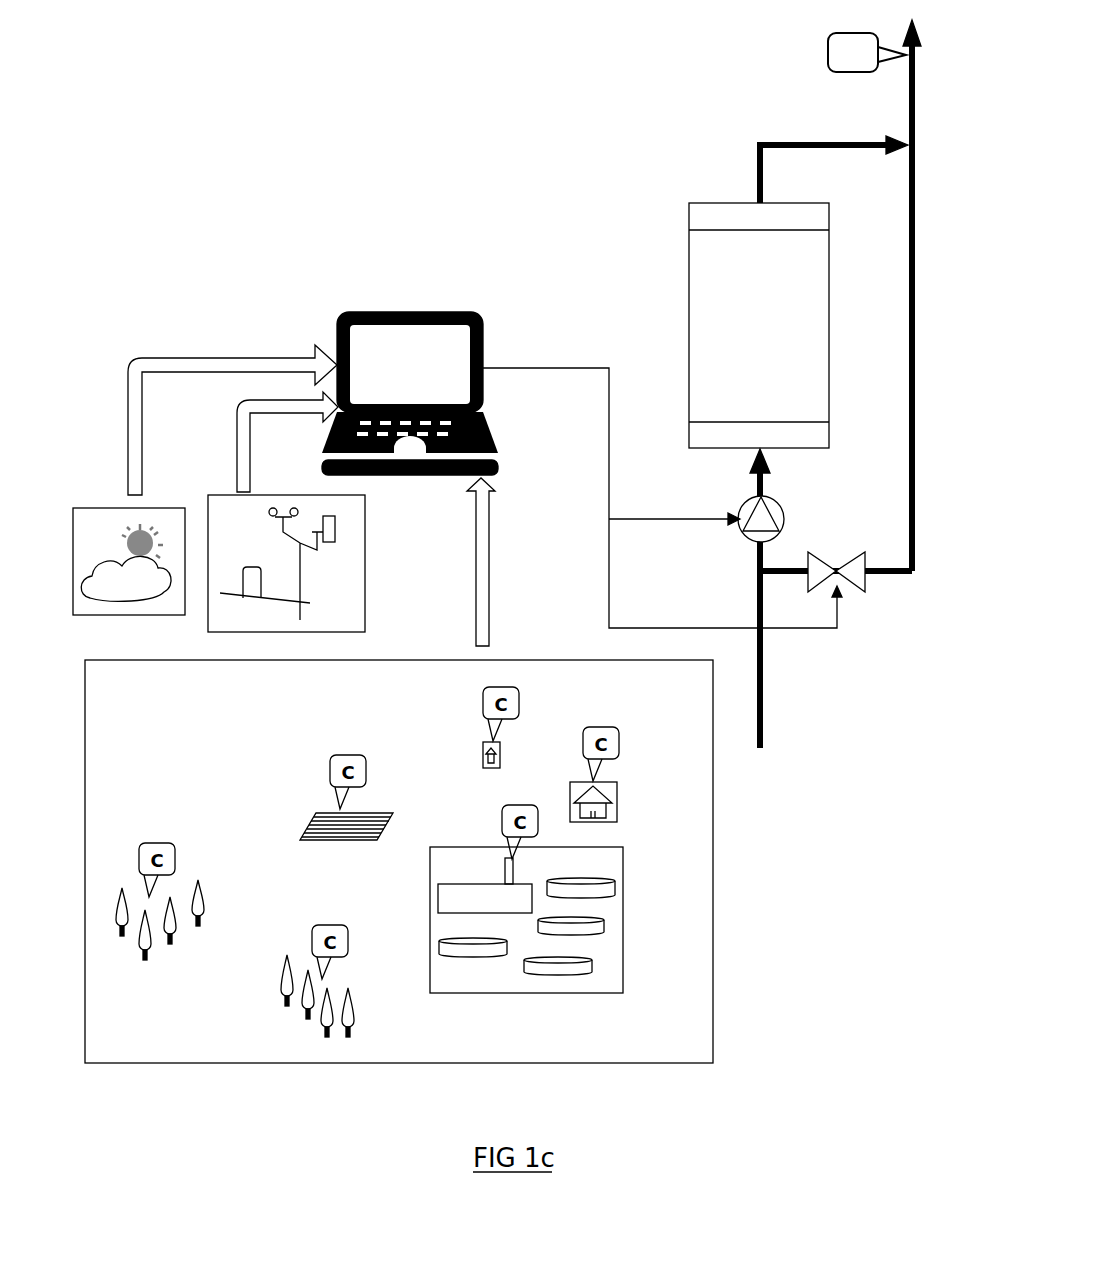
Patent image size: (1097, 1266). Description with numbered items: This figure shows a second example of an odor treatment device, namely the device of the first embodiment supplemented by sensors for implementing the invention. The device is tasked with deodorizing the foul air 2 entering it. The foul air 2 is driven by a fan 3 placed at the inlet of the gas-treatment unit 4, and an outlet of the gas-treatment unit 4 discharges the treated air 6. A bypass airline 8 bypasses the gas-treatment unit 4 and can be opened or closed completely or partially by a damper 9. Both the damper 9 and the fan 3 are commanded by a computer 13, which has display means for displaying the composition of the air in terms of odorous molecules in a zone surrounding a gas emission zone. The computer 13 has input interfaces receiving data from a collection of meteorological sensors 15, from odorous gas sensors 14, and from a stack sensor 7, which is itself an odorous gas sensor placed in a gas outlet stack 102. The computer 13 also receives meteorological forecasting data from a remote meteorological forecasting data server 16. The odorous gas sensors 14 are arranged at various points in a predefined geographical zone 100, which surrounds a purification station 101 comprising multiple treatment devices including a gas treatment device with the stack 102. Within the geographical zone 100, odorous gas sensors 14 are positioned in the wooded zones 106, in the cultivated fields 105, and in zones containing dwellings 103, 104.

The foul air 2 is at (764, 696).
The fan 3 is at (784, 506).
The gas-treatment unit 4 is at (688, 240).
The treated air 6 is at (908, 112).
The stack sensor 7 is at (827, 62).
The bypass airline 8 is at (906, 573).
The damper 9 is at (858, 592).
The computer 13 is at (379, 311).
The odorous gas sensors 14 is at (158, 842).
The meteorological sensors 15 is at (366, 548).
The remote meteorological forecasting data server 16 is at (108, 507).
The predefined geographical zone 100 is at (714, 880).
The purification station 101 is at (624, 872).
The gas outlet stack 102 is at (504, 870).
The zone containing dwellings 103 is at (618, 800).
The zone containing dwellings 104 is at (482, 752).
The cultivated fields 105 is at (312, 830).
The wooded zones 106 is at (200, 962).